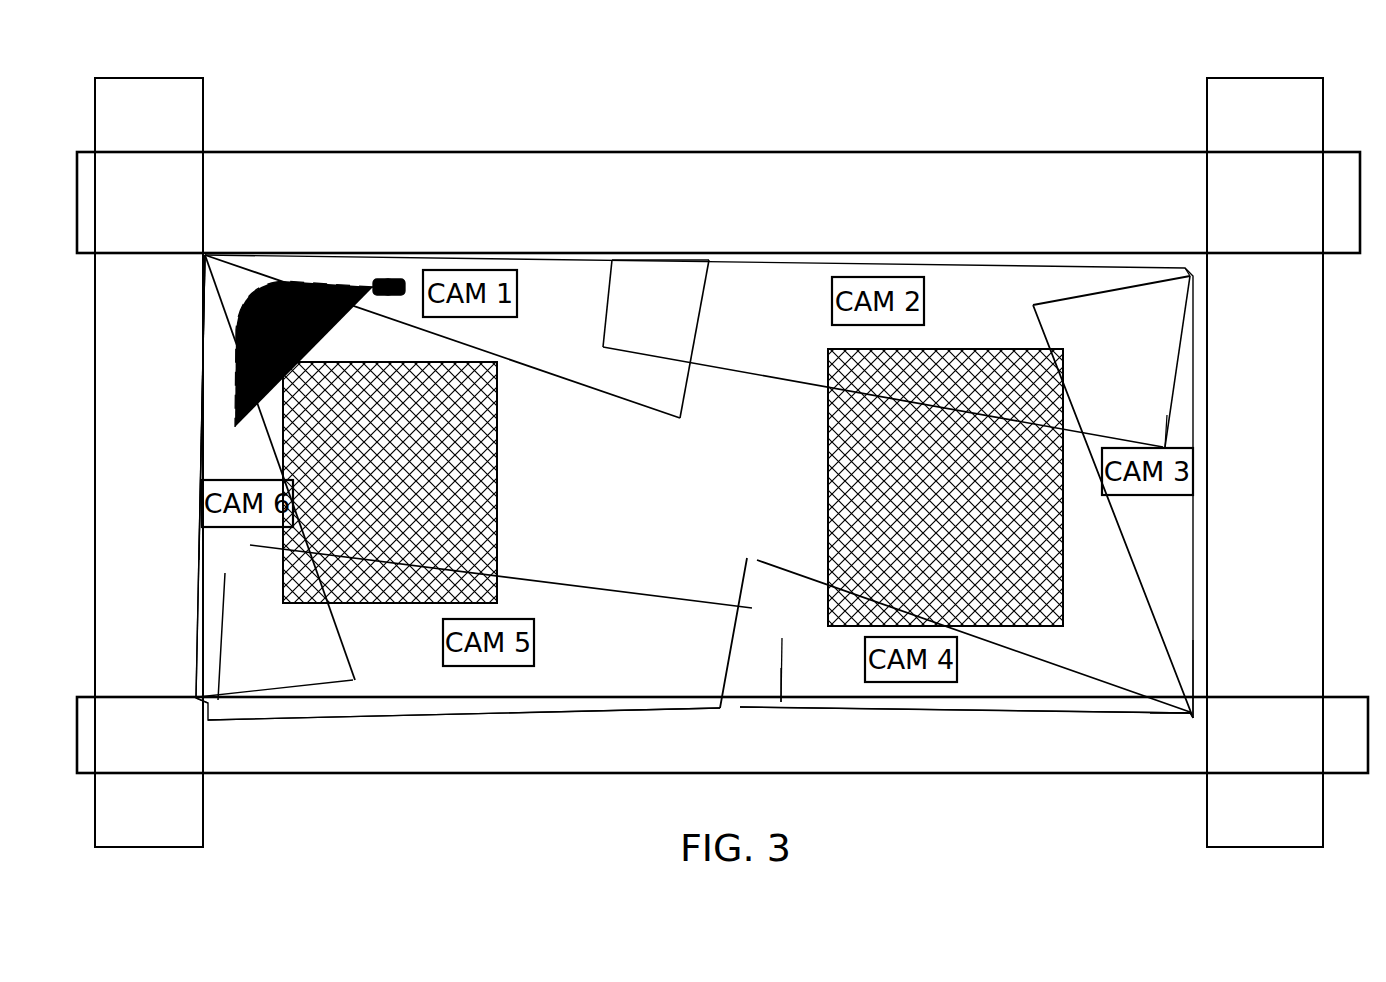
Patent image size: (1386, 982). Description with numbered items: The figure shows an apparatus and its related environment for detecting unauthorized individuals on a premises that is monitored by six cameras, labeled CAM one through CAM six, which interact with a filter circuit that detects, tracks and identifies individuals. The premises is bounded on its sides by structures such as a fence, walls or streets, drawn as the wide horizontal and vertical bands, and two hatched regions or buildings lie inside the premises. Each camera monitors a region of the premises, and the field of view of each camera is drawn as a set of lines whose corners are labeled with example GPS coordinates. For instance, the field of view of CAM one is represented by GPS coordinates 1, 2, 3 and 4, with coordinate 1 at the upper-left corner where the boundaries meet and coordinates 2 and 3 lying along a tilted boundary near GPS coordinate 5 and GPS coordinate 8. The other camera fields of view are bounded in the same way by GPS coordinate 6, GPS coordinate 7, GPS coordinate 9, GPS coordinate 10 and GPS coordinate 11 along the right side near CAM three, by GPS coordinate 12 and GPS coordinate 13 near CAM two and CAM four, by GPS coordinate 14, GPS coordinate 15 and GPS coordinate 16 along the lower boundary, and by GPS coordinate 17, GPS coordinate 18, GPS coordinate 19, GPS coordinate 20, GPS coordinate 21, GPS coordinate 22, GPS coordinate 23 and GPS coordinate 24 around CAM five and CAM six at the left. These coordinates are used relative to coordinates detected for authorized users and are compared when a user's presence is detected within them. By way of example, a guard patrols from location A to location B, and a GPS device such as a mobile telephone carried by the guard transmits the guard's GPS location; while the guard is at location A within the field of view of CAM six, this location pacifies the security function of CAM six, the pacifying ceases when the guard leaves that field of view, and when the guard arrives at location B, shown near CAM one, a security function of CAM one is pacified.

The GPS coordinate 1 is at (442, 319).
The GPS coordinate 2 is at (695, 339).
The GPS coordinate 3 is at (660, 335).
The GPS coordinate 4 is at (280, 450).
The GPS coordinate 5 is at (626, 283).
The GPS coordinate 6 is at (1170, 254).
The GPS coordinate 7 is at (1148, 431).
The GPS coordinate 8 is at (876, 385).
The GPS coordinate 9 is at (1197, 361).
The GPS coordinate 10 is at (1213, 703).
The GPS coordinate 11 is at (1215, 679).
The GPS coordinate 12 is at (1101, 495).
The GPS coordinate 13 is at (955, 629).
The GPS coordinate 14 is at (1173, 728).
The GPS coordinate 15 is at (1151, 728).
The GPS coordinate 16 is at (946, 725).
The GPS coordinate 17 is at (485, 620).
The GPS coordinate 18 is at (771, 654).
The GPS coordinate 19 is at (783, 685).
The GPS coordinate 20 is at (461, 727).
The GPS coordinate 21 is at (185, 476).
The GPS coordinate 22 is at (185, 407).
The GPS coordinate 23 is at (279, 672).
The GPS coordinate 24 is at (184, 693).
The location A is at (295, 370).
The location B is at (387, 306).